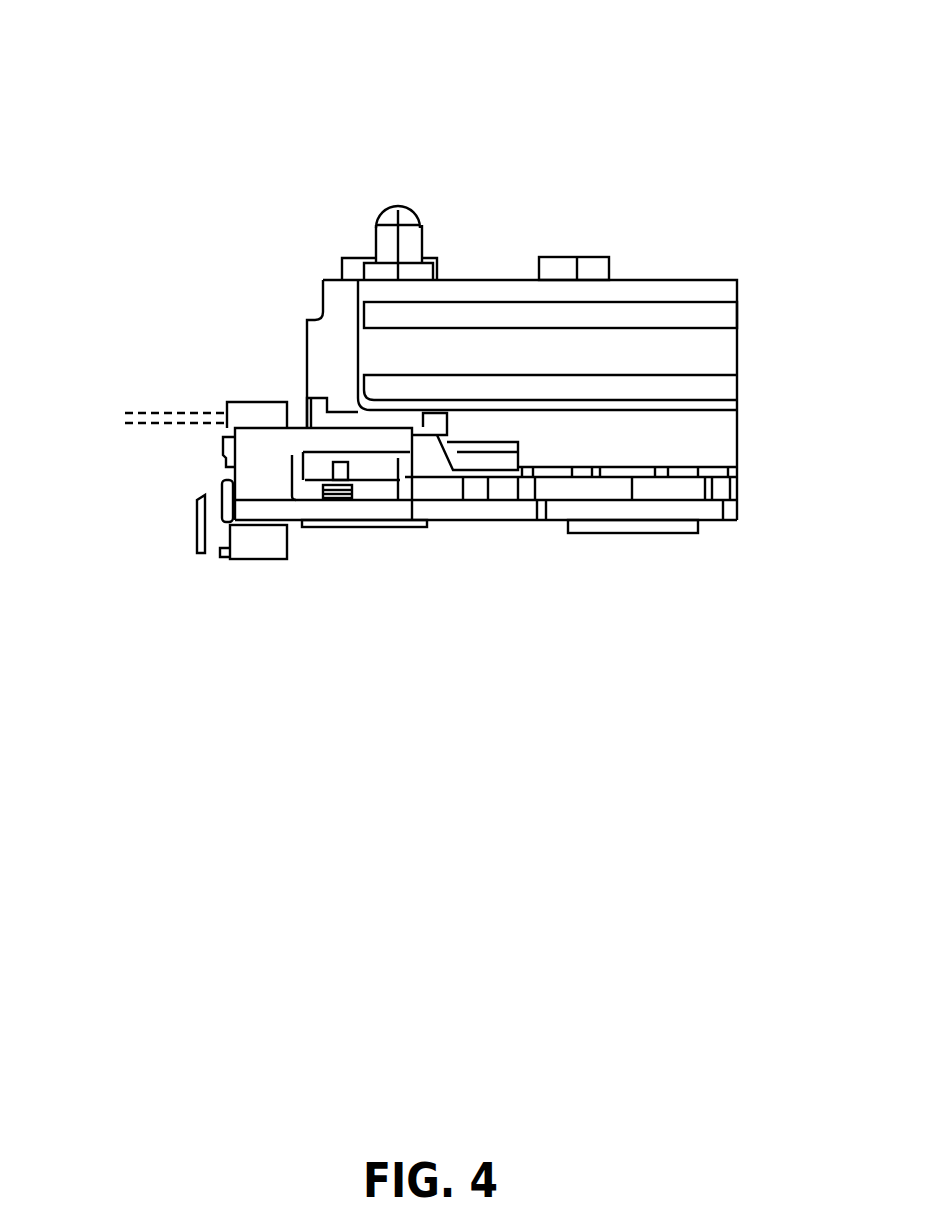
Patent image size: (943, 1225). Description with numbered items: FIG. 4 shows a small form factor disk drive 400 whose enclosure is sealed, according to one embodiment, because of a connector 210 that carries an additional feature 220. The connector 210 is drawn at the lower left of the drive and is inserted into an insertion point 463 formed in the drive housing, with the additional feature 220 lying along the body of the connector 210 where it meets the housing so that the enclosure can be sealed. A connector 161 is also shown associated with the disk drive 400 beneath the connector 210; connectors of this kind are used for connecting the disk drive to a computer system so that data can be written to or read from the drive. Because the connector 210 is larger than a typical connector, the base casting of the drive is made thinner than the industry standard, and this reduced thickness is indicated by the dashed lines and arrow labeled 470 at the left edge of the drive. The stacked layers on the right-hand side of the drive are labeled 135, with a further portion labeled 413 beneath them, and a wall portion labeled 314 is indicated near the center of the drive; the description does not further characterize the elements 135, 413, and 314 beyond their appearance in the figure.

The small form factor disk drive 400 is at (433, 311).
The housing wall 314 is at (398, 381).
The additional feature 220 is at (402, 424).
The stacked layers 135 is at (722, 318).
The base member 413 is at (722, 447).
The insertion point 463 is at (298, 420).
The base casting thickness 470 is at (111, 419).
The connector 210 is at (248, 507).
The connector 161 is at (396, 507).